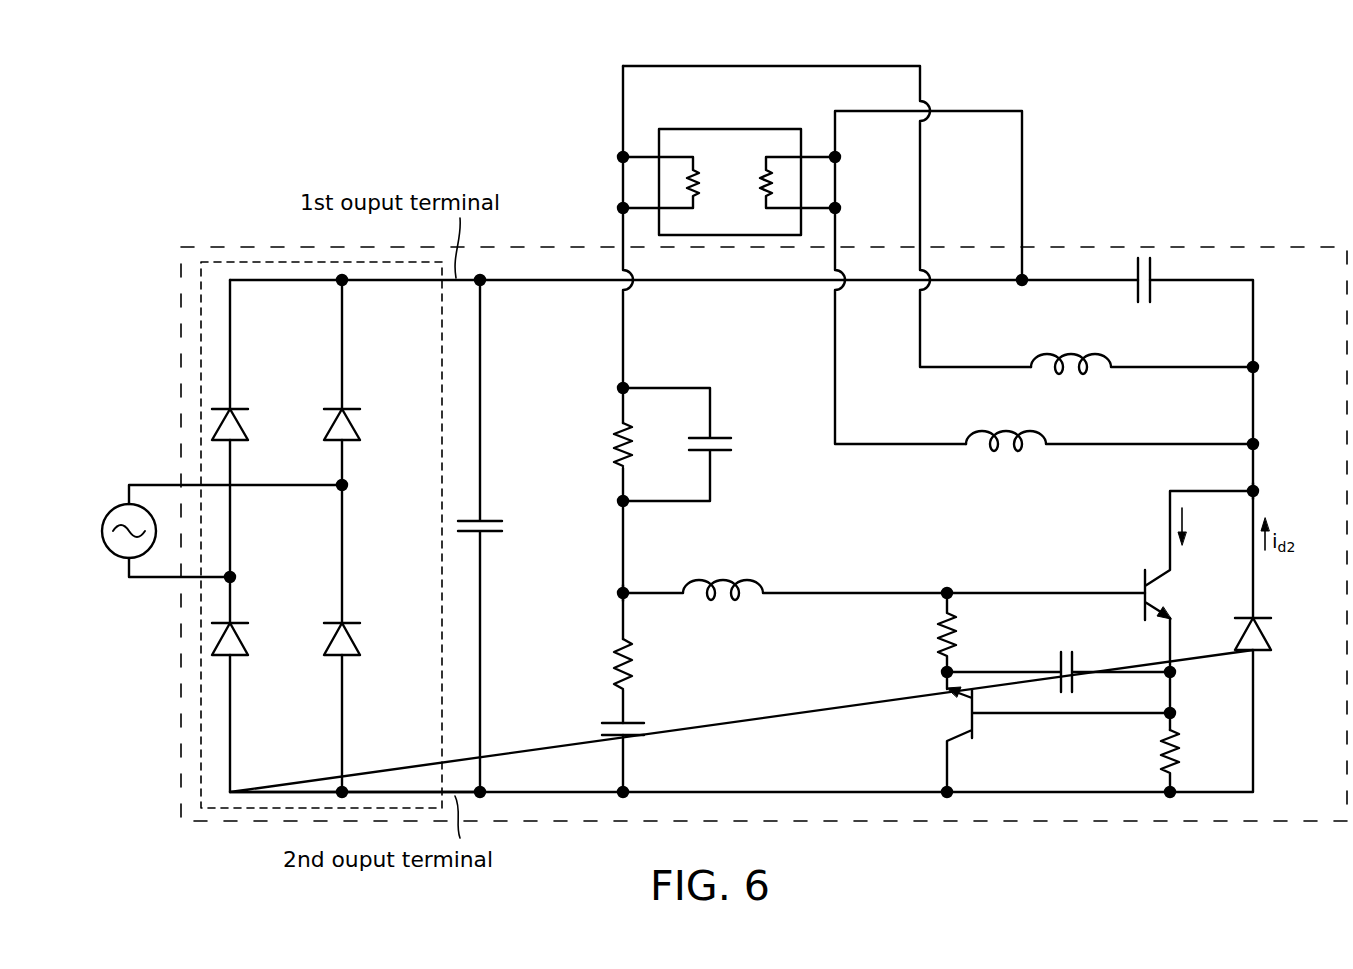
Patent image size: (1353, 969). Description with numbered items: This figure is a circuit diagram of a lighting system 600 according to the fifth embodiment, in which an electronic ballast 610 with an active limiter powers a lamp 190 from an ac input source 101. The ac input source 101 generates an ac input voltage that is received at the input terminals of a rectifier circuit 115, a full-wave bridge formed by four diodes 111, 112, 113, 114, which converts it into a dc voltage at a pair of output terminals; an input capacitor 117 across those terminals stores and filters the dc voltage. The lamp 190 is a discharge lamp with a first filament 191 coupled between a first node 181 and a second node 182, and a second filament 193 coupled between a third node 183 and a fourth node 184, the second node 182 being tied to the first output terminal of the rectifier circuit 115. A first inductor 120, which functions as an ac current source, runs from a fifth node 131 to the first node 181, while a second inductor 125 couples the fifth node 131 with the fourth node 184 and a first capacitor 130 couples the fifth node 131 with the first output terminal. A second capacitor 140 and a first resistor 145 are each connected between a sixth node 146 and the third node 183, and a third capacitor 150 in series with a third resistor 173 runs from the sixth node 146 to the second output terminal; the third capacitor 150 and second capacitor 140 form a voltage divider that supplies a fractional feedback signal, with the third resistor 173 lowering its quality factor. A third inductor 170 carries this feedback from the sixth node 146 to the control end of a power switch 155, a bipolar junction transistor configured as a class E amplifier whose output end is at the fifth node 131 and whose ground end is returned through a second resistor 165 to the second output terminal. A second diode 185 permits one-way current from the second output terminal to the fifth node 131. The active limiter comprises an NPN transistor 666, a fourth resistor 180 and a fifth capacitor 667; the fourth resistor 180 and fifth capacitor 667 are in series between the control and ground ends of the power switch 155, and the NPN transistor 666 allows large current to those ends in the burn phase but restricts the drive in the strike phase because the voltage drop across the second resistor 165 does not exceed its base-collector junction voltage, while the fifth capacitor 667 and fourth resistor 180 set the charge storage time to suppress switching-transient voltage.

The lighting system 600 is at (1185, 142).
The electronic ballast 610 is at (252, 246).
The ac input source 101 is at (116, 506).
The diode 111 is at (249, 426).
The diode 112 is at (361, 426).
The diode 113 is at (249, 640).
The diode 114 is at (361, 640).
The rectifier circuit 115 is at (200, 797).
The input capacitor 117 is at (505, 526).
The first inductor 120 is at (1008, 432).
The second inductor 125 is at (1075, 356).
The first capacitor 130 is at (1145, 305).
The fifth node 131 is at (1263, 485).
The second capacitor 140 is at (734, 446).
The first resistor 145 is at (612, 444).
The sixth node 146 is at (618, 591).
The third capacitor 150 is at (646, 730).
The power switch 155 is at (1160, 575).
The second resistor 165 is at (1160, 756).
The third inductor 170 is at (723, 580).
The third resistor 173 is at (612, 668).
The fourth resistor 180 is at (940, 637).
The first node 181 is at (840, 208).
The second node 182 is at (840, 157).
The third node 183 is at (619, 208).
The fourth node 184 is at (619, 157).
The second diode 185 is at (1271, 632).
The lamp 190 is at (753, 128).
The first filament 191 is at (760, 188).
The second filament 193 is at (699, 178).
The NPN transistor 666 is at (950, 714).
The fifth capacitor 667 is at (1063, 649).